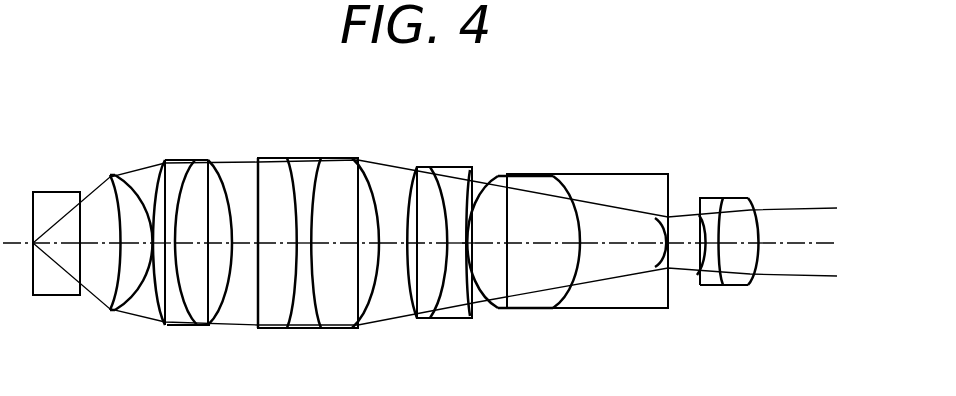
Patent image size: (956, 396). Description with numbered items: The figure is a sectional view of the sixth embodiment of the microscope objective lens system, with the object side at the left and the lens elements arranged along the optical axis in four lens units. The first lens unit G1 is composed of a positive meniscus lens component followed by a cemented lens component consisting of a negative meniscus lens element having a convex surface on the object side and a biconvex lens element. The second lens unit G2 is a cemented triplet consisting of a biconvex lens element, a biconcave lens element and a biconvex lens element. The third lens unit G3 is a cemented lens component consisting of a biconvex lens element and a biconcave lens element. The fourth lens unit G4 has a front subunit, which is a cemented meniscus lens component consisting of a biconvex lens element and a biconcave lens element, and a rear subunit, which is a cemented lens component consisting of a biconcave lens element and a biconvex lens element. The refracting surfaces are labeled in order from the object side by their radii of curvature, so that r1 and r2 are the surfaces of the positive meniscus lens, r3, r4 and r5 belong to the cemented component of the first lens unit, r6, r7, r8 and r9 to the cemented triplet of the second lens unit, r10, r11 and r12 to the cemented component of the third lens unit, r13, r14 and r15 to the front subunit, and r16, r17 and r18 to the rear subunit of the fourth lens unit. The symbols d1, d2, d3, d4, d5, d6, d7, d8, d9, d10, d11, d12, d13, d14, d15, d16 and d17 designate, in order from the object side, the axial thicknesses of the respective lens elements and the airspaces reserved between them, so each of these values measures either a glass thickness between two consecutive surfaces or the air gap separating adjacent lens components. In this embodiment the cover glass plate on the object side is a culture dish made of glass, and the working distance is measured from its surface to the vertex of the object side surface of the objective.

The first lens unit G1 is at (243, 116).
The second lens unit G2 is at (367, 116).
The third lens unit G3 is at (493, 116).
The fourth lens unit G4 is at (798, 116).
The radius of curvature of first surface r1 is at (110, 210).
The radius of curvature of second surface r2 is at (147, 205).
The radius of curvature of third surface r3 is at (157, 205).
The radius of curvature of fourth surface r4 is at (180, 205).
The radius of curvature of fifth surface r5 is at (230, 205).
The radius of curvature of sixth surface r6 is at (259, 192).
The radius of curvature of seventh surface r7 is at (288, 160).
The radius of curvature of eighth surface r8 is at (313, 158).
The radius of curvature of ninth surface r9 is at (358, 160).
The radius of curvature of tenth surface r10 is at (417, 170).
The radius of curvature of eleventh surface r11 is at (440, 167).
The radius of curvature of twelfth surface r12 is at (473, 170).
The radius of curvature of thirteenth surface r13 is at (498, 176).
The radius of curvature of fourteenth surface r14 is at (557, 175).
The radius of curvature of fifteenth surface r15 is at (655, 218).
The radius of curvature of sixteenth surface r16 is at (699, 215).
The radius of curvature of seventeenth surface r17 is at (727, 198).
The radius of curvature of eighteenth surface r18 is at (750, 200).
The first thickness or airspace d1 is at (118, 277).
The second thickness or airspace d2 is at (128, 247).
The third thickness or airspace d3 is at (173, 247).
The fourth thickness or airspace d4 is at (198, 247).
The fifth thickness or airspace d5 is at (235, 247).
The sixth thickness or airspace d6 is at (272, 247).
The seventh thickness or airspace d7 is at (302, 247).
The eighth thickness or airspace d8 is at (332, 247).
The ninth thickness or airspace d9 is at (387, 247).
The tenth thickness or airspace d10 is at (423, 247).
The eleventh thickness or airspace d11 is at (470, 247).
The twelfth thickness or airspace d12 is at (468, 247).
The thirteenth thickness or airspace d13 is at (517, 247).
The fourteenth thickness or airspace d14 is at (618, 247).
The fifteenth thickness or airspace d15 is at (680, 247).
The sixteenth thickness or airspace d16 is at (712, 247).
The seventeenth thickness or airspace d17 is at (743, 247).